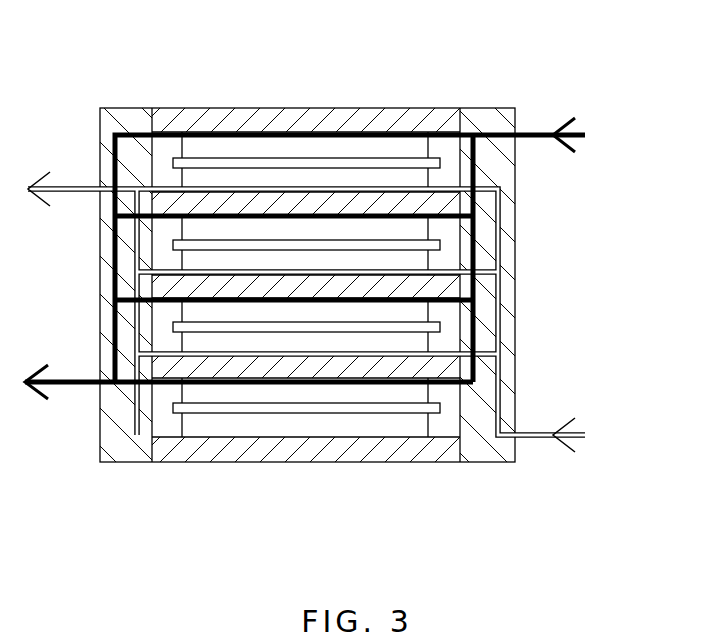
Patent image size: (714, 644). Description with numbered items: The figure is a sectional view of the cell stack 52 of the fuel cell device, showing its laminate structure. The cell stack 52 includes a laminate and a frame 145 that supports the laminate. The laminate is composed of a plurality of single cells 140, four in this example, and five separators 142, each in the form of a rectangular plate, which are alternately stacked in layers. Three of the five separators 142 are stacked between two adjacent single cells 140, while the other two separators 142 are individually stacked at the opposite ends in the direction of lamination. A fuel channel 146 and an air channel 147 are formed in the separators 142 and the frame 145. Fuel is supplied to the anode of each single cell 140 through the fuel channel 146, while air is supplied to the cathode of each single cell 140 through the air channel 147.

The cell stack 52 is at (264, 98).
The single cell 140 is at (410, 158).
The separator 142 is at (323, 108).
The frame 145 is at (512, 165).
The fuel channel 146 is at (197, 108).
The air channel 147 is at (503, 205).